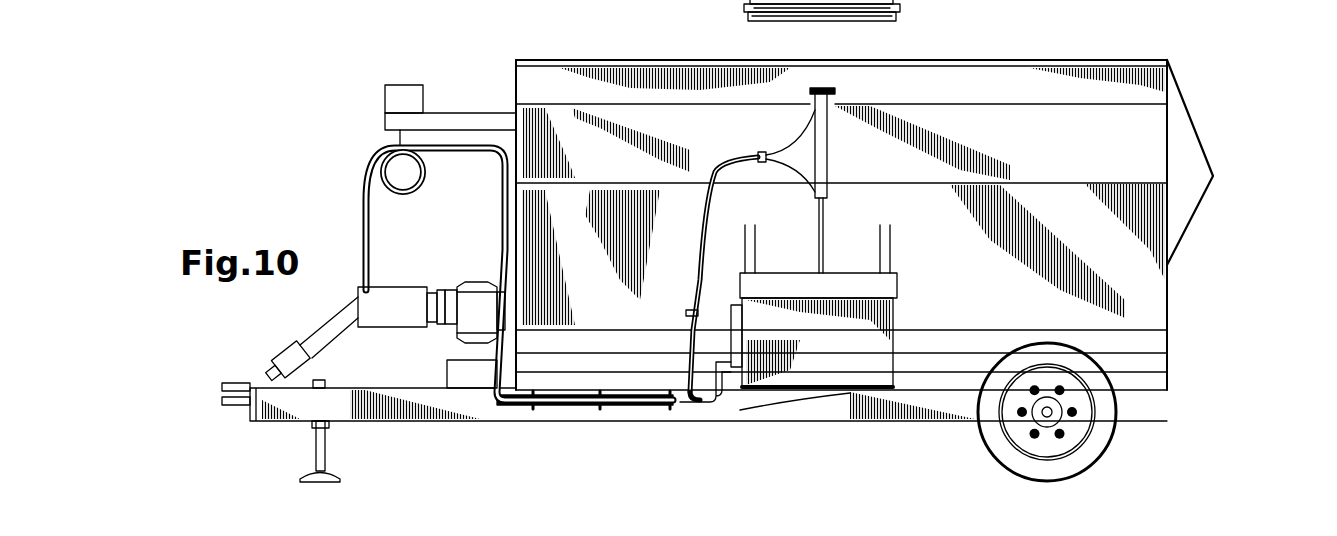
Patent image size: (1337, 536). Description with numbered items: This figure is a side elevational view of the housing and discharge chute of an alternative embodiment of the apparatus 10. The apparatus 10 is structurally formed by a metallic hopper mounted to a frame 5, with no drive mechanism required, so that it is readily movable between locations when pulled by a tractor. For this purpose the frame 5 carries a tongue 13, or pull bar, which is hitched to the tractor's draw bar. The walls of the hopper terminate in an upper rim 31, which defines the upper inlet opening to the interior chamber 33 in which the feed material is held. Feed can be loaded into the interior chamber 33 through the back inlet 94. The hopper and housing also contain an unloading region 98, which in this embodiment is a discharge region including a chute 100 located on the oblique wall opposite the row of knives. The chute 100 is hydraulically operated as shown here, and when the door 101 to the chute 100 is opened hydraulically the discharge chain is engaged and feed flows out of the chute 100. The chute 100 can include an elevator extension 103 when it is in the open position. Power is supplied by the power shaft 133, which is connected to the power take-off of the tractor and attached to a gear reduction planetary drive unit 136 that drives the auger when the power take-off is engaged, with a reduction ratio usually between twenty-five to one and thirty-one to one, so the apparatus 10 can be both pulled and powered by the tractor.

The apparatus 10 is at (911, 198).
The frame 5 is at (380, 422).
The tongue 13 is at (222, 383).
The upper rim 31 is at (1083, 58).
The interior chamber 33 is at (643, 57).
The back inlet 94 is at (1205, 150).
The unloading region 98 is at (860, 27).
The chute 100 is at (900, 298).
The door 101 is at (780, 390).
The elevator extension 103 is at (912, 1).
The power shaft 133 is at (300, 345).
The gear reduction planetary drive unit 136 is at (468, 285).